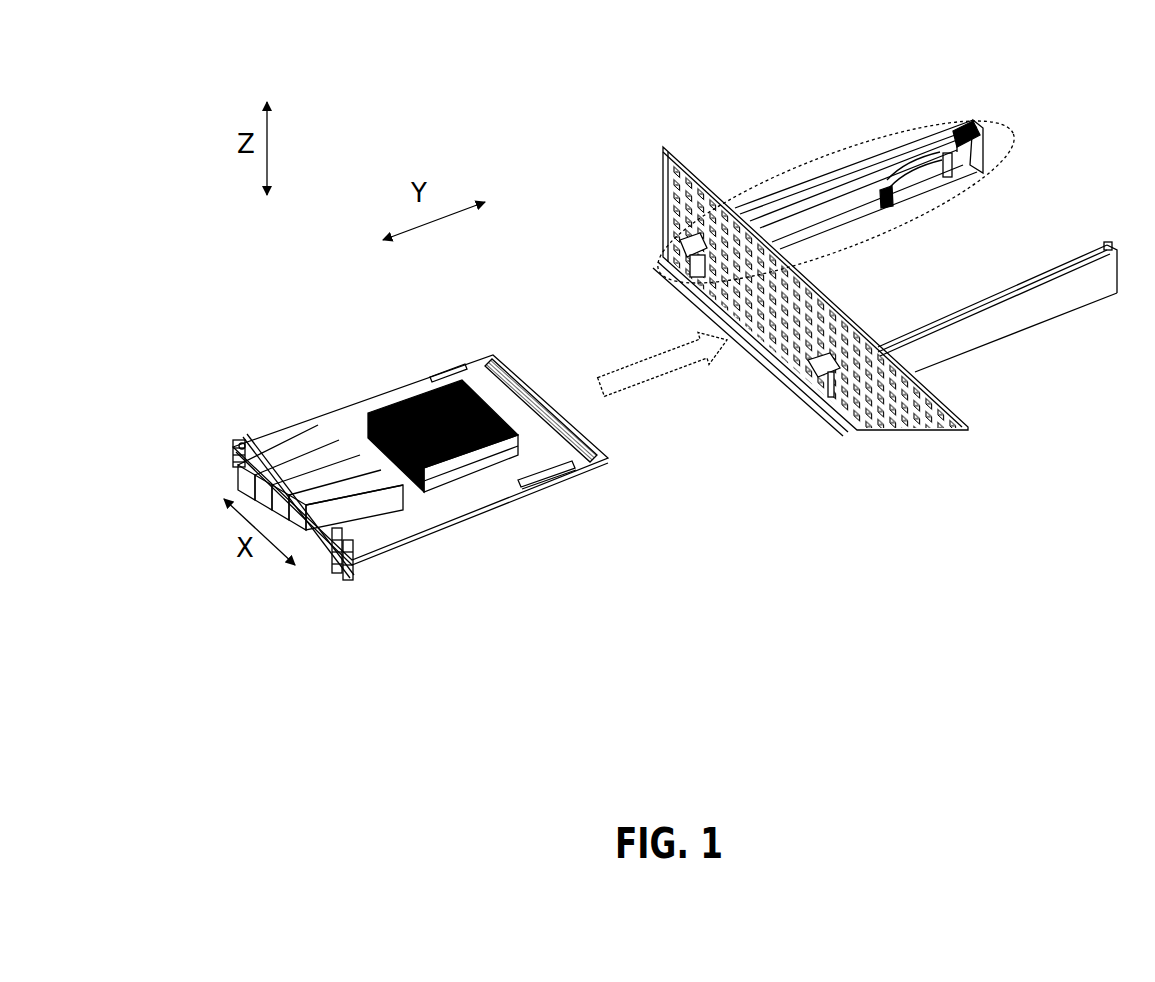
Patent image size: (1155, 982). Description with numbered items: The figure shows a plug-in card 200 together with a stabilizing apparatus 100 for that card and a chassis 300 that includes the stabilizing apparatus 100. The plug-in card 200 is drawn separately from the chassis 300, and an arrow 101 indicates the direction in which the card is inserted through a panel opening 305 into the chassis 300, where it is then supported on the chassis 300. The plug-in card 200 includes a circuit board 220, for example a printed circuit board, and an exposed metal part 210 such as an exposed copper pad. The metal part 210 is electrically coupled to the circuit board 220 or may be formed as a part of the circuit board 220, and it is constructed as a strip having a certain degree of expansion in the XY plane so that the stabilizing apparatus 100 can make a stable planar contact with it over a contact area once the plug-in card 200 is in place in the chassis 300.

The stabilizing apparatus 100 is at (918, 116).
The arrow 101 is at (665, 352).
The plug-in card 200 is at (353, 384).
The exposed metal part 210 is at (558, 463).
The circuit board 220 is at (460, 497).
The chassis 300 is at (740, 138).
The panel opening 305 is at (793, 347).